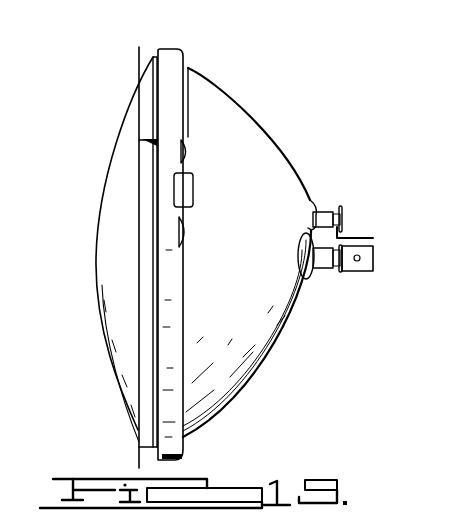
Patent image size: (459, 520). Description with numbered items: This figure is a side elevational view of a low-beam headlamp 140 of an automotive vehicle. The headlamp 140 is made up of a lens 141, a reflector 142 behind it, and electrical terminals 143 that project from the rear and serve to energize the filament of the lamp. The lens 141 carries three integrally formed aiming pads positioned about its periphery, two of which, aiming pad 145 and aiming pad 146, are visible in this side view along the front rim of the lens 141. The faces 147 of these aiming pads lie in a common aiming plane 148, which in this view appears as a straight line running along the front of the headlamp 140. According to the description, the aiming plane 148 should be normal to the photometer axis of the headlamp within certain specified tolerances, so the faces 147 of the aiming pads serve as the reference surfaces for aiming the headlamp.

The low-beam headlamp 140 is at (203, 244).
The lens 141 is at (137, 132).
The reflector 142 is at (243, 135).
The electrical terminals 143 is at (353, 268).
The aiming pad 145 is at (160, 133).
The aiming pad 146 is at (138, 444).
The faces of the aiming pads 147 is at (140, 143).
The aiming plane 148 is at (138, 459).